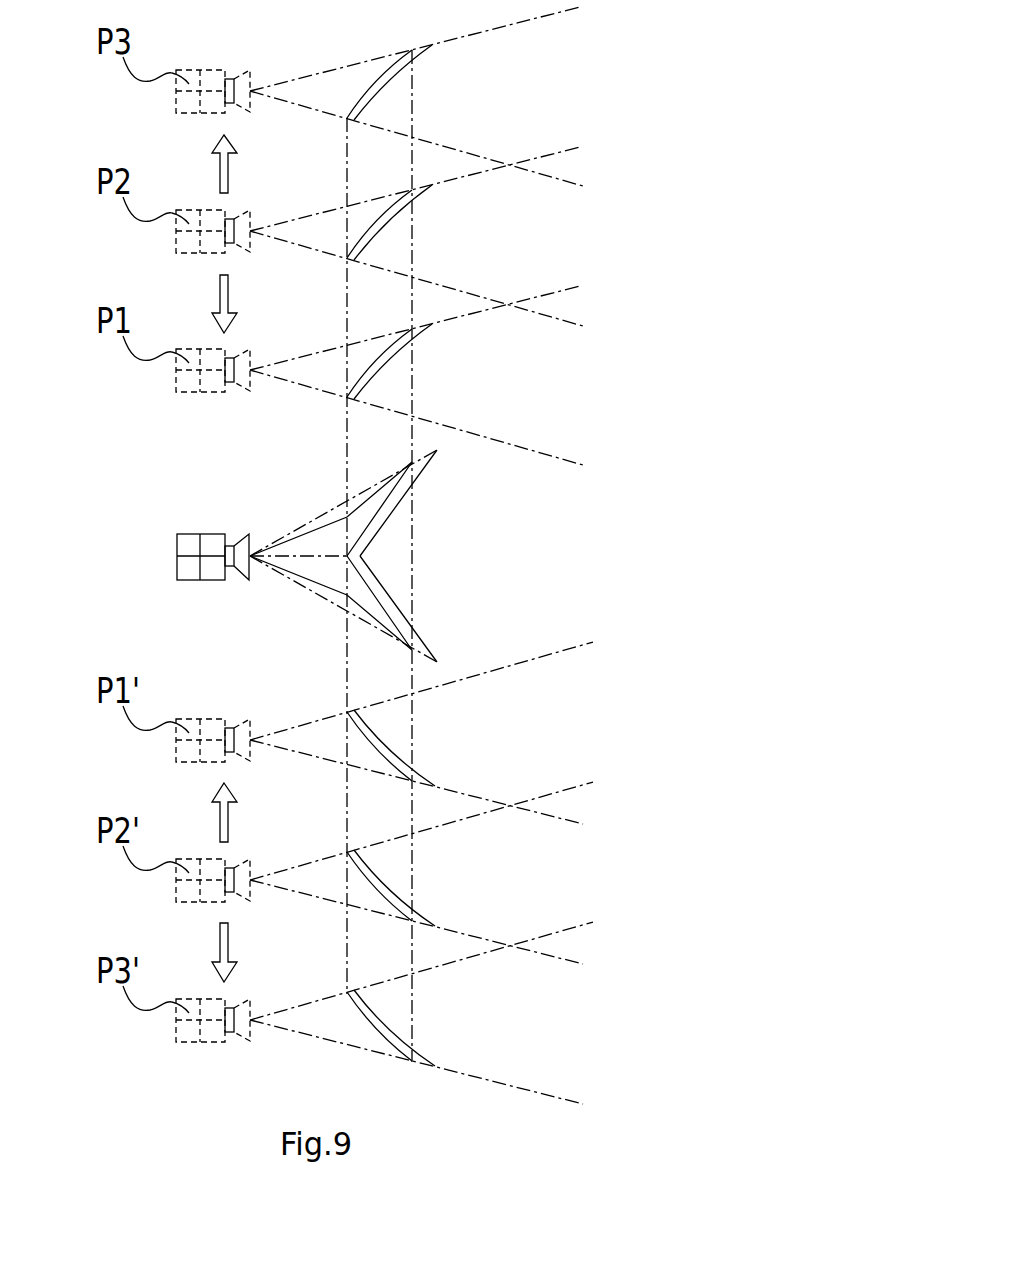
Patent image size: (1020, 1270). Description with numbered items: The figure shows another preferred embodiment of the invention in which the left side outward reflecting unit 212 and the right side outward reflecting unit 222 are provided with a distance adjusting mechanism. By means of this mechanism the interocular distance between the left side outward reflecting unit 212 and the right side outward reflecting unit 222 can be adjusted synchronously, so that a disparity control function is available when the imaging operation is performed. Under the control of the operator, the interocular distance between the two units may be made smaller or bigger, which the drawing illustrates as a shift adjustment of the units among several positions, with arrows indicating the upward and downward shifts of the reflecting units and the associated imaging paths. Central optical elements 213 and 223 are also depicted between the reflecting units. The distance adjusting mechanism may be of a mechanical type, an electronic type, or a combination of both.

The left side outward reflecting unit 212 is at (398, 227).
The central prism upper portion 213 is at (400, 490).
The central prism lower portion 223 is at (403, 612).
The right side outward reflecting unit 222 is at (400, 888).